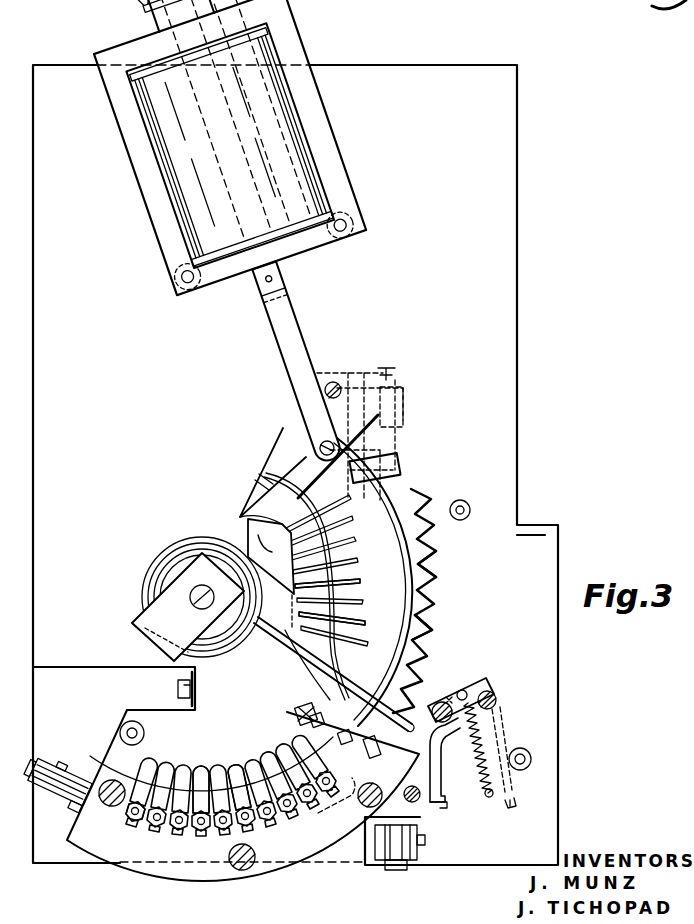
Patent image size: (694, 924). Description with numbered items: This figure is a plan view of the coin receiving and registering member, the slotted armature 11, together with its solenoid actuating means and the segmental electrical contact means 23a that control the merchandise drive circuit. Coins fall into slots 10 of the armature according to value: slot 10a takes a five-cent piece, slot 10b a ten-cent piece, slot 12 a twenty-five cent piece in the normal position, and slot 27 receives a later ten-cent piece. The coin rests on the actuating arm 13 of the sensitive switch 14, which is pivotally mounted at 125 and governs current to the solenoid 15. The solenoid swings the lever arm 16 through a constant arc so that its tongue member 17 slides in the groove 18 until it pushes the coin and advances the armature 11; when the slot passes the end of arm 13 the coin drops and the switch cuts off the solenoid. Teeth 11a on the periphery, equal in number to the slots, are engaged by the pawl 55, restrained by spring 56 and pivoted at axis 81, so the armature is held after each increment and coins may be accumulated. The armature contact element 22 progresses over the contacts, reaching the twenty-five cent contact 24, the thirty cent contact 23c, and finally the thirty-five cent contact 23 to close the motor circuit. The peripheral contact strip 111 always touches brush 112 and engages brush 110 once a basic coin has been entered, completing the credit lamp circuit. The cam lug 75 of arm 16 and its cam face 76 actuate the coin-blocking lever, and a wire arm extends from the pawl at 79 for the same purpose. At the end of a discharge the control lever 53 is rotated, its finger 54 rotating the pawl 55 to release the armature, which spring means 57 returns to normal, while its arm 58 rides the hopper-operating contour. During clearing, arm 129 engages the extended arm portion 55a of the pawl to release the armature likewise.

The solenoid 15 is at (258, 60).
The pivot of sensitive switch 125 is at (392, 382).
The sensitive switch 14 is at (390, 440).
The actuating arm 13 is at (380, 513).
The slot 10 is at (420, 552).
The slotted armature 11 is at (436, 590).
The teeth 11a is at (436, 572).
The peripheral contact strip 111 is at (432, 633).
The slot 27 is at (348, 533).
The slot 12 is at (368, 572).
The tongue member 17 is at (358, 560).
The slot 10b is at (362, 622).
The slot 10a is at (356, 647).
The lever arm 16 is at (258, 485).
The spring means 57 is at (172, 545).
The cam lug 75 is at (262, 548).
The cam face 76 is at (243, 516).
The groove 18 is at (312, 674).
The contact 23 is at (205, 780).
The contact 23c is at (200, 776).
The contact 24 is at (240, 780).
The contact means 23a is at (148, 833).
The contact element 22 is at (298, 740).
The brush 112 is at (368, 720).
The brush 110 is at (347, 818).
The arm extension point 79 is at (418, 712).
The axis of pawl 81 is at (459, 690).
The control lever 53 is at (497, 698).
The finger 54 is at (480, 718).
The pawl 55 is at (433, 742).
The spring 56 is at (476, 772).
The extended arm portion 55a is at (442, 800).
The arm 58 is at (512, 798).
The arm 129 is at (418, 802).